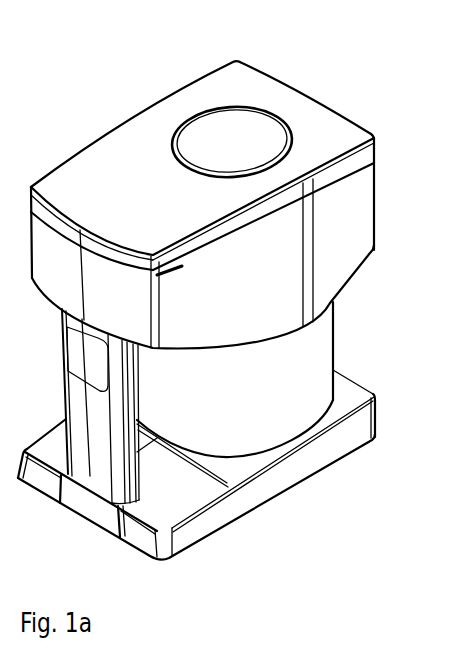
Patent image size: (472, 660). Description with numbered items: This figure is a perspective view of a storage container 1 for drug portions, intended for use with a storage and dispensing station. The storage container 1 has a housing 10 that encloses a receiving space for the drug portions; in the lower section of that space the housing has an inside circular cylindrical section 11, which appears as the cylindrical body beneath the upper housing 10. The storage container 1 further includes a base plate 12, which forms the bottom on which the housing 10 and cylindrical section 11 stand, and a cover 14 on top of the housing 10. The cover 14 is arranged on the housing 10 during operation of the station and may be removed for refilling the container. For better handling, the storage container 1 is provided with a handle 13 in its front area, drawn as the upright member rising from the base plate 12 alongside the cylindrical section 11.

The storage container 1 is at (125, 100).
The housing 10 is at (355, 207).
The inside circular cylindrical section 11 is at (302, 365).
The base plate 12 is at (283, 472).
The handle 13 is at (108, 472).
The cover 14 is at (283, 102).